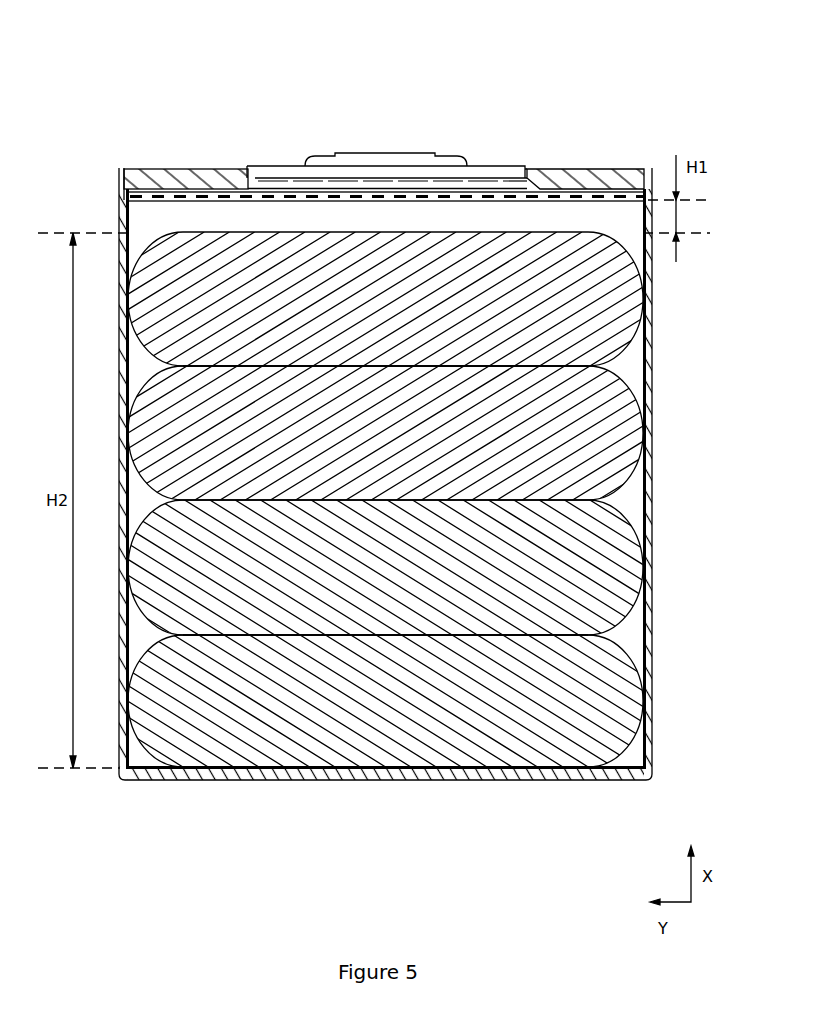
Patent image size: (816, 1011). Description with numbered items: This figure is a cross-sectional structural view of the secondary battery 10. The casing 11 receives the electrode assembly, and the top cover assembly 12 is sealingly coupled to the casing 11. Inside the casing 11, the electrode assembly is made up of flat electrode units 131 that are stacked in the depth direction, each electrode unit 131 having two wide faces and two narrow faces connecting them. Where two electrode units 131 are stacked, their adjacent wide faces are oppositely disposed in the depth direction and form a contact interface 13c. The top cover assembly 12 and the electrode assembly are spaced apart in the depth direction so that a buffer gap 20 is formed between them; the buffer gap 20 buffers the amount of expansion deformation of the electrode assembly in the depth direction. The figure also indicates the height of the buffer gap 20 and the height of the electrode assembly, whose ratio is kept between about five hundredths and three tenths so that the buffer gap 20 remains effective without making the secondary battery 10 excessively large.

The secondary battery 10 is at (412, 47).
The casing 11 is at (180, 779).
The top cover assembly 12 is at (565, 170).
The buffer gap 20 is at (225, 215).
The electrode unit 131 is at (605, 263).
The contact interface 13c is at (522, 365).